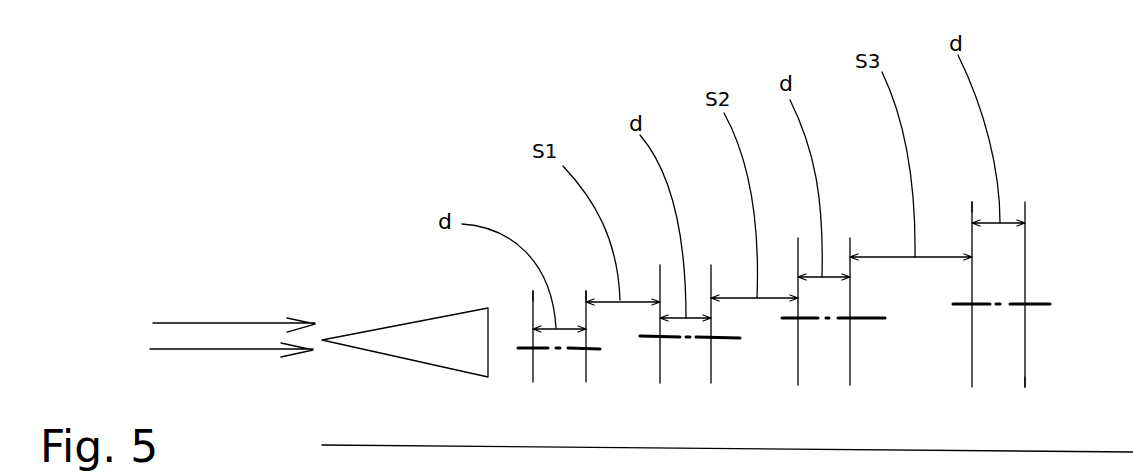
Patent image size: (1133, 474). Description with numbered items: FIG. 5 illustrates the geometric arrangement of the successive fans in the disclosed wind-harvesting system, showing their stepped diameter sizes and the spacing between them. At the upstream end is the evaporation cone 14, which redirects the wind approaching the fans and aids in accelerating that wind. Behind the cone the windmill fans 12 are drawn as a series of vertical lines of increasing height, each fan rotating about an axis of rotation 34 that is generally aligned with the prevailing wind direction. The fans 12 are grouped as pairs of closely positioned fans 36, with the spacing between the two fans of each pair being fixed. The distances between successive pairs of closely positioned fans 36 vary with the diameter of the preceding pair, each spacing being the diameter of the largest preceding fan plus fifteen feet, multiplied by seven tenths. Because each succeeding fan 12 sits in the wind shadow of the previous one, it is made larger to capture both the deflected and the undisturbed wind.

The evaporation cone 14 is at (442, 317).
The windmill fan 12 is at (533, 382).
The axis of rotation 34 is at (600, 351).
The pair of closely positioned fans 36 is at (533, 291).